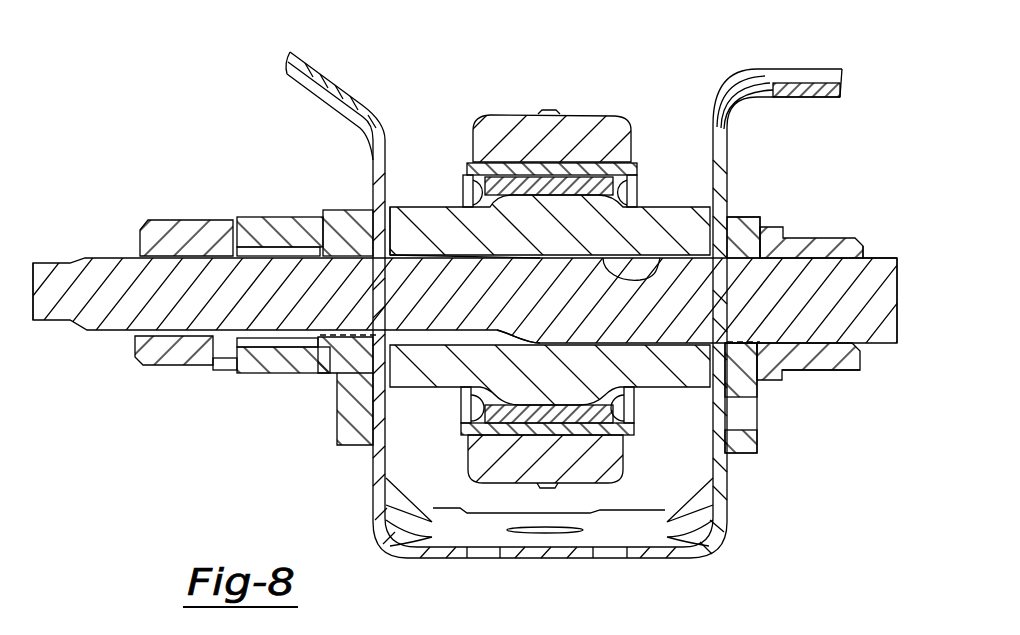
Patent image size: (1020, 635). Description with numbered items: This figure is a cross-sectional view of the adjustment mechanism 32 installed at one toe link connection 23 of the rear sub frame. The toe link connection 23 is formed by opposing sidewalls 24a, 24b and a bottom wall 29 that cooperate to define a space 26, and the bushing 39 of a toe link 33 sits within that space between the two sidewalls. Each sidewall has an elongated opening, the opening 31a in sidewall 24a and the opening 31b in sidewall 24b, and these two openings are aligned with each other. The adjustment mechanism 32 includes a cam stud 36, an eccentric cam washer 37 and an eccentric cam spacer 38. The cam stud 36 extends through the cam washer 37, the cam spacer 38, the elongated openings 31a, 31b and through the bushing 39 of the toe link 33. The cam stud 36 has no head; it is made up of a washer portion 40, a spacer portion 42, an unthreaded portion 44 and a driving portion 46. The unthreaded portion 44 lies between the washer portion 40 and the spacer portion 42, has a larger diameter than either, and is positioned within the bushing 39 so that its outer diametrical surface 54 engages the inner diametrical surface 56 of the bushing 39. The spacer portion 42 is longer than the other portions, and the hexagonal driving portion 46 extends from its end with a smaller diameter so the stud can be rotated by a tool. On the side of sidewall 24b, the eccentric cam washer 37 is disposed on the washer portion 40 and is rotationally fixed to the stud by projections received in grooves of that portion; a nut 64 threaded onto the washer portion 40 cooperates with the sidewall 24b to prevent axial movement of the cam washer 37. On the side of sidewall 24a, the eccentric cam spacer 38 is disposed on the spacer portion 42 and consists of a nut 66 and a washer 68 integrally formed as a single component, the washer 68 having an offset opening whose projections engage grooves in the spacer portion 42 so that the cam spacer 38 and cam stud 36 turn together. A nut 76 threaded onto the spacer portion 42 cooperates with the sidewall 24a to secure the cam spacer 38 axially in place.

The toe link connection 23 is at (818, 70).
The sidewall 24a is at (373, 500).
The sidewall 24b is at (727, 500).
The space 26 is at (683, 132).
The bottom wall 29 is at (648, 561).
The elongated opening 31a is at (390, 250).
The elongated opening 31b is at (740, 250).
The adjustment mechanism 32 is at (806, 379).
The toe link 33 is at (578, 108).
The cam stud 36 is at (880, 257).
The eccentric cam washer 37 is at (760, 222).
The eccentric cam spacer 38 is at (292, 380).
The bushing 39 is at (445, 222).
The washer portion 40 is at (898, 303).
The spacer portion 42 is at (85, 257).
The unthreaded portion 44 is at (644, 262).
The driving portion 46 is at (33, 282).
The outer diametrical surface 54 is at (537, 258).
The inner diametrical surface 56 is at (660, 258).
The nut 64 is at (855, 238).
The nut 66 is at (260, 227).
The washer 68 is at (347, 217).
The nut 76 is at (183, 222).